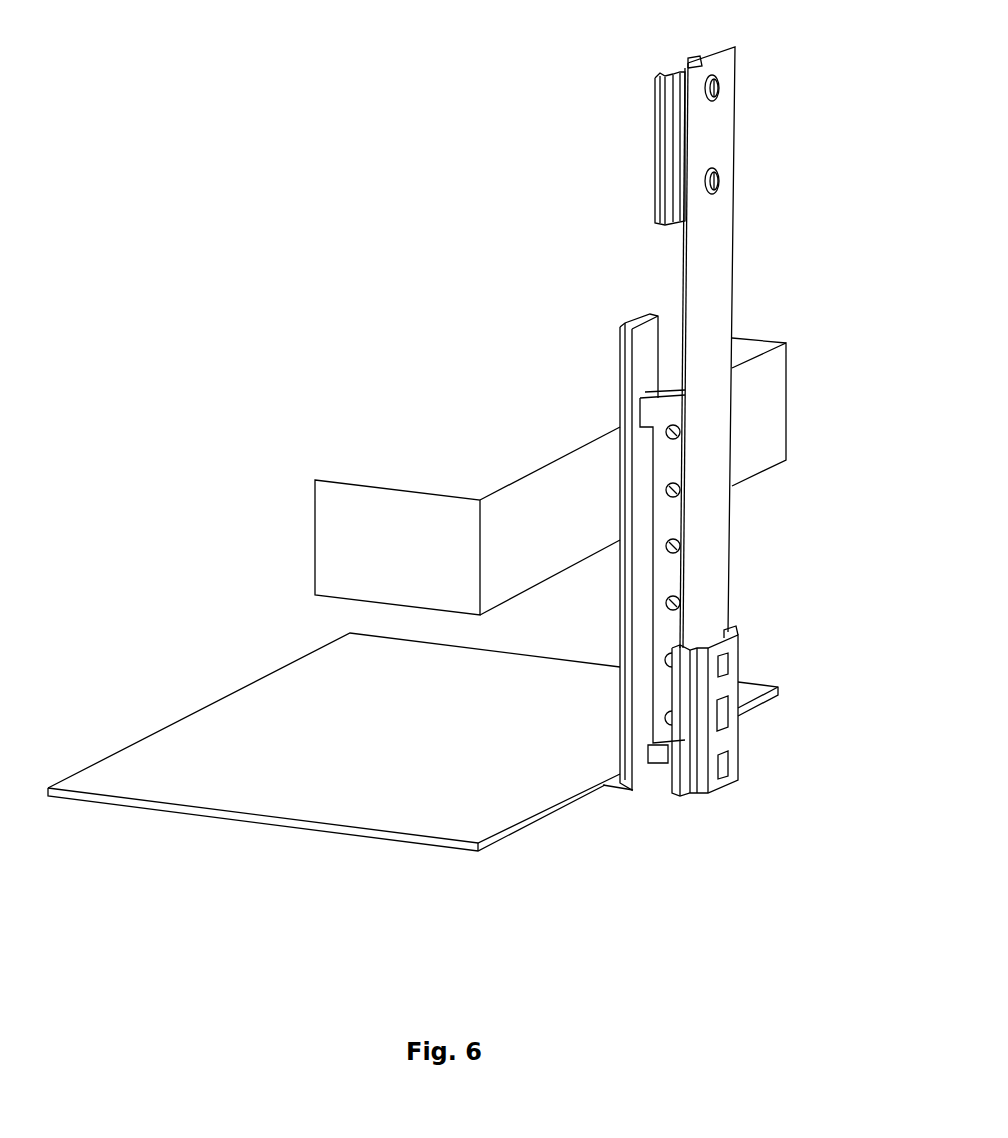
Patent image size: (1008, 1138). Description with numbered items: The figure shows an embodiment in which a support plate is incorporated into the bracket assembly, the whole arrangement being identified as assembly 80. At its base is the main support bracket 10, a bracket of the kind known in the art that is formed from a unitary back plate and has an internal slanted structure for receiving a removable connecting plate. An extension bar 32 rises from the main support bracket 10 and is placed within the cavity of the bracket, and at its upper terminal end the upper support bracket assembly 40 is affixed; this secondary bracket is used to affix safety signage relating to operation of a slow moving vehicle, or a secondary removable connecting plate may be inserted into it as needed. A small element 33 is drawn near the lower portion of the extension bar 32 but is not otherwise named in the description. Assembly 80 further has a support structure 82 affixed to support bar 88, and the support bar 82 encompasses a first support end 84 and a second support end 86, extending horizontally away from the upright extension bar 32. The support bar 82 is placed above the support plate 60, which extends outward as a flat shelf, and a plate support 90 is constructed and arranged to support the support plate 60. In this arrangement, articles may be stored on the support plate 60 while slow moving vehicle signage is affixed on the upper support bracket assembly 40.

The main support bracket 10 is at (745, 752).
The extension bar 32 is at (708, 267).
The lower tab 33 is at (662, 757).
The upper support bracket assembly 40 is at (662, 93).
The support plate 60 is at (328, 713).
The assembly 80 is at (437, 207).
The support bar 82 is at (766, 480).
The first support end 84 is at (755, 337).
The second support end 86 is at (382, 488).
The support bar 88 is at (640, 320).
The plate support 90 is at (620, 787).